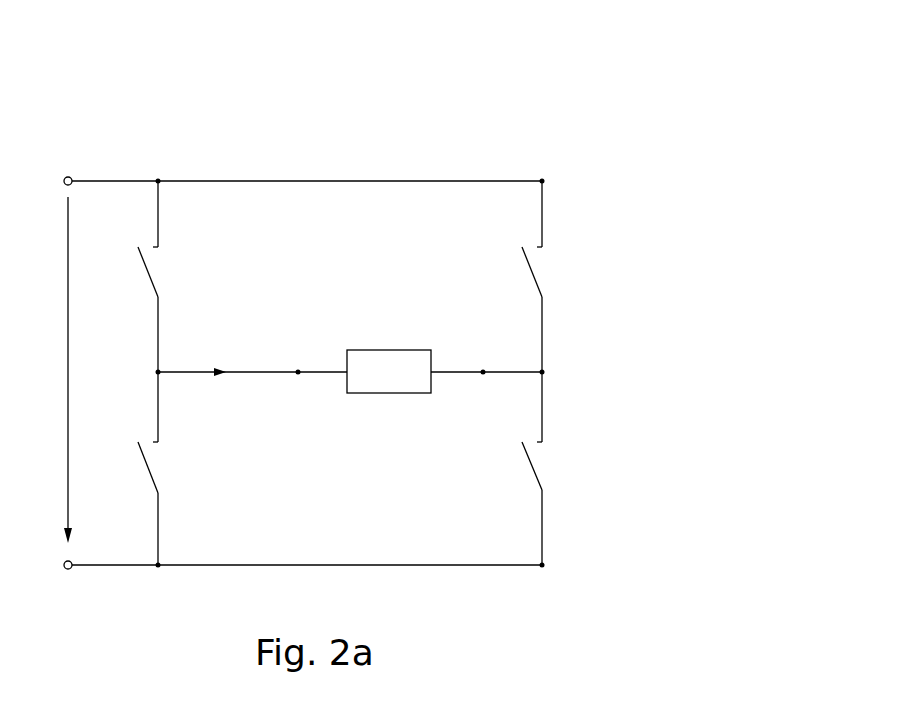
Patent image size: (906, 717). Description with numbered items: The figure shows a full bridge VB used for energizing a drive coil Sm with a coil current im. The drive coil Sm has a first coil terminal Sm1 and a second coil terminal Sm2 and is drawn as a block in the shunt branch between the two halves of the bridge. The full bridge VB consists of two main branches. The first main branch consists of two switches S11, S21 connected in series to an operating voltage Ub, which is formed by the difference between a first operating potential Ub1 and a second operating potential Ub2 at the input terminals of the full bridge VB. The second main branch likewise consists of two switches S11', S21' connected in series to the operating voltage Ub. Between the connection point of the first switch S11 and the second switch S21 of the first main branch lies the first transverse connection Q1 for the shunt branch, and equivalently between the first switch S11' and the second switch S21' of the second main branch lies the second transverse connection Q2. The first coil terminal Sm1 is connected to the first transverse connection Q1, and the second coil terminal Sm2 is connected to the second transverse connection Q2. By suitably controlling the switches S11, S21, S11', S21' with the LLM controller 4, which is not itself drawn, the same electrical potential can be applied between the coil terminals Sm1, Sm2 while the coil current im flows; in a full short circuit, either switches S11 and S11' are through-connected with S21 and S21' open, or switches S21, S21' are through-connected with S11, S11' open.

The LLM controller 4 is at (502, 92).
The full bridge VB is at (173, 152).
The first operating potential Ub1 is at (71, 165).
The second operating potential Ub2 is at (71, 583).
The operating voltage Ub is at (47, 370).
The first switch of the first main branch S11 is at (133, 276).
The second switch of the first main branch S21 is at (132, 468).
The first switch of the second main branch S11' is at (561, 276).
The second switch of the second main branch S21' is at (561, 468).
The first transverse connection Q1 is at (210, 375).
The second transverse connection Q2 is at (534, 375).
The coil current im is at (208, 353).
The first coil terminal Sm1 is at (312, 355).
The second coil terminal Sm2 is at (470, 355).
The drive coil Sm is at (403, 350).